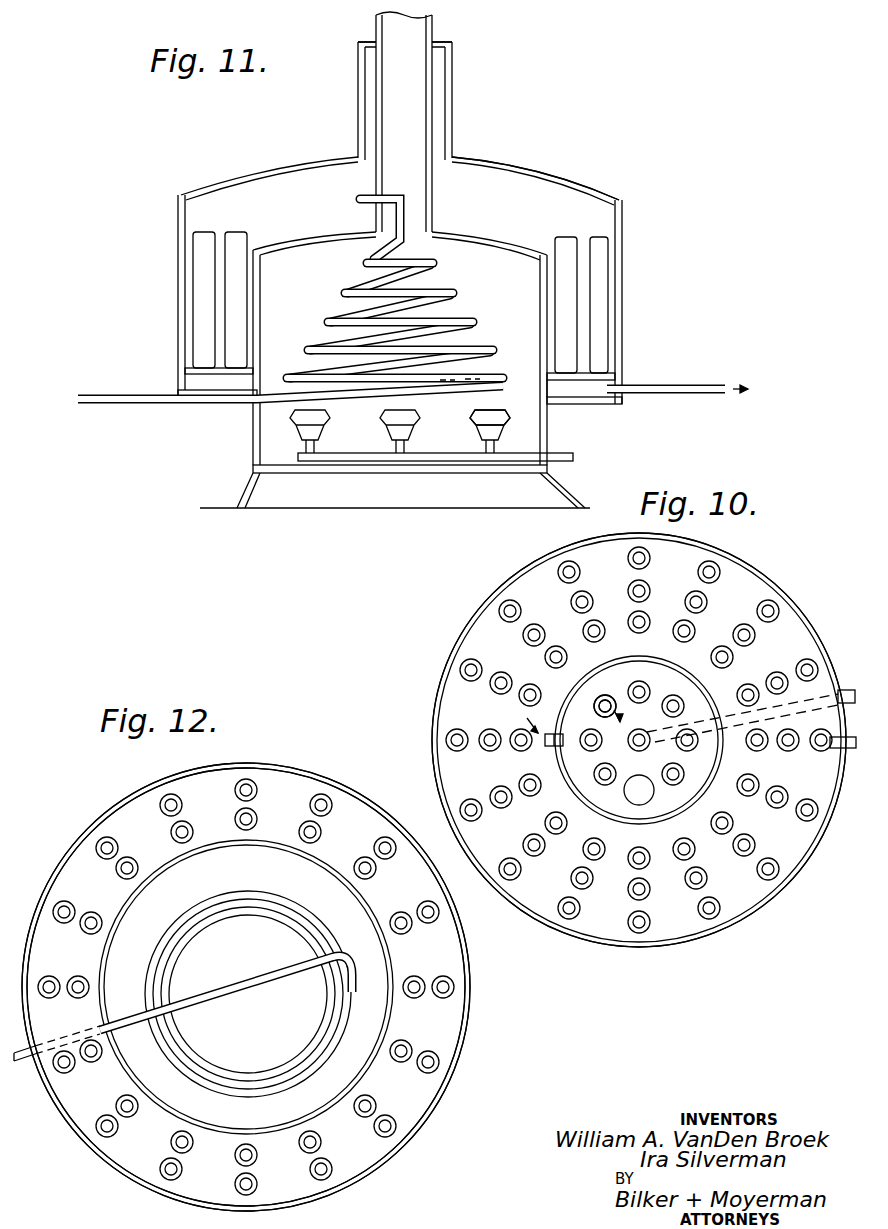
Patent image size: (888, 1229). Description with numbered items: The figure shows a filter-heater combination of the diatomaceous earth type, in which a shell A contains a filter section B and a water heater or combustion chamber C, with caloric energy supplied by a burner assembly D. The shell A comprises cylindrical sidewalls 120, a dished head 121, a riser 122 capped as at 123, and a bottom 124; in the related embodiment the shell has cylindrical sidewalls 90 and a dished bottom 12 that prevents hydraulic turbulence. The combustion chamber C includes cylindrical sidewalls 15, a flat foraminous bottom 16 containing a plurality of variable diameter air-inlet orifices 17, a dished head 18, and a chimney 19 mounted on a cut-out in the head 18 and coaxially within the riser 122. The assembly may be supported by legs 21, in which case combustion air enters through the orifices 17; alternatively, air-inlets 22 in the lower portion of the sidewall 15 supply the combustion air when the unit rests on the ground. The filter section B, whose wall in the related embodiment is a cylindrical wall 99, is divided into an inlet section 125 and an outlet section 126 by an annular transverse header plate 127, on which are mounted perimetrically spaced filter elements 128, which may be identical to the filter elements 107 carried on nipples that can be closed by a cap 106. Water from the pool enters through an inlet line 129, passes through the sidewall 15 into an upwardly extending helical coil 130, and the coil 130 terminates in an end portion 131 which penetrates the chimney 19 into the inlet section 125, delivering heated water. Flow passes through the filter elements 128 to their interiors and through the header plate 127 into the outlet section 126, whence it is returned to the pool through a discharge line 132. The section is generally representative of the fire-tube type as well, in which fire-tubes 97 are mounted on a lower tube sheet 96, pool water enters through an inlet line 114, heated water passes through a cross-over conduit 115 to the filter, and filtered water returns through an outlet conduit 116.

In FIG. 11, the shell A is at (176, 216).
In FIG. 11, the filter section B is at (516, 182).
In FIG. 11, the water heater or combustion chamber C is at (512, 441).
In FIG. 11, the burner assembly D is at (302, 434).
In FIG. 11, the bottom 12 is at (170, 345).
In FIG. 12, the cylindrical sidewalls 15 is at (226, 842).
In FIG. 11, the flat foraminous bottom 16 is at (283, 474).
In FIG. 11, the air-inlet orifices 17 is at (320, 470).
In FIG. 11, the head 18 is at (326, 236).
In FIG. 11, the chimney 19 is at (376, 30).
In FIG. 11, the legs 21 is at (243, 488).
In FIG. 11, the alternate air-inlets 22 is at (254, 440).
In FIG. 10, the cylindrical sidewalls 90 is at (440, 693).
In FIG. 10, the lower tube sheet 96 is at (745, 908).
In FIG. 10, the fire-tubes 97 is at (742, 628).
In FIG. 10, the cylindrical wall 99 is at (572, 794).
In FIG. 10, the cap 106 is at (645, 795).
In FIG. 10, the filter elements 107 is at (596, 706).
In FIG. 10, the inlet line 114 is at (846, 750).
In FIG. 10, the cross-over conduit 115 is at (545, 746).
In FIG. 10, the outlet conduit 116 is at (846, 690).
In FIG. 11, the cylindrical sidewalls 120 is at (622, 240).
In FIG. 12, the cylindrical sidewalls 120 is at (340, 1190).
In FIG. 11, the dished heads 121 is at (582, 176).
In FIG. 11, the risers 122 is at (452, 84).
In FIG. 11, the cap 123 is at (440, 44).
In FIG. 11, the bottoms 124 is at (612, 404).
In FIG. 11, the inlet section 125 is at (520, 217).
In FIG. 11, the outlet section 126 is at (605, 441).
In FIG. 11, the annular transverse header plate 127 is at (215, 374).
In FIG. 12, the annular transverse header plate 127 is at (455, 1010).
In FIG. 11, the filter elements 128 is at (200, 258).
In FIG. 12, the filter elements 128 is at (400, 1078).
In FIG. 11, the inlet line 129 is at (108, 400).
In FIG. 12, the inlet line 129 is at (28, 1064).
In FIG. 12, the helical coil 130 is at (238, 893).
In FIG. 11, the end portion 131 is at (362, 196).
In FIG. 11, the discharge line 132 is at (700, 392).
In FIG. 12, the discharge line 132 is at (252, 987).